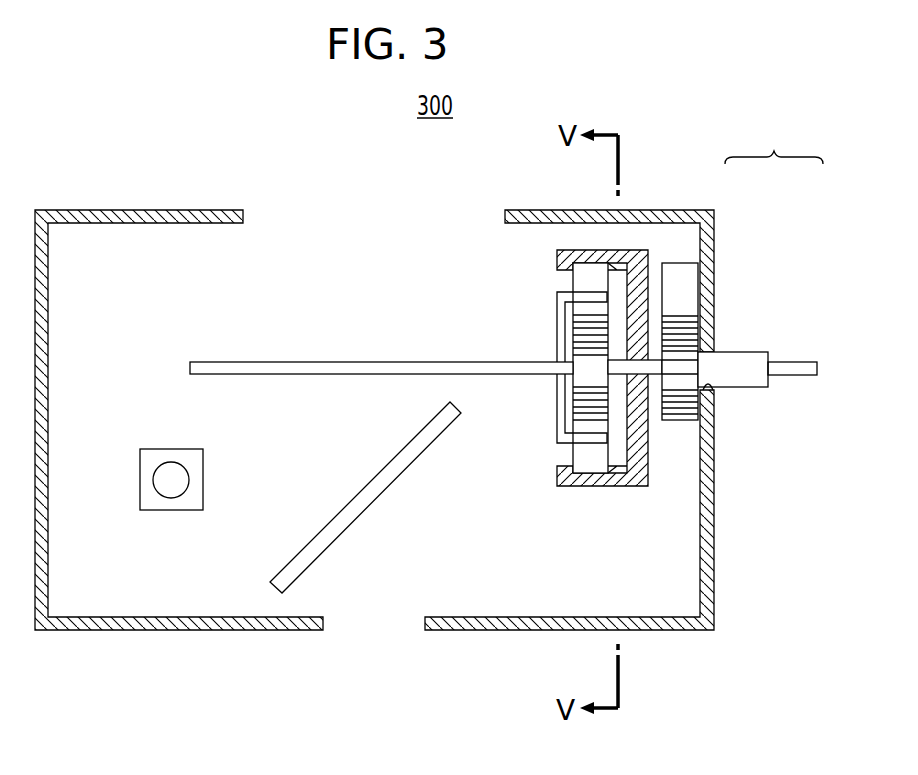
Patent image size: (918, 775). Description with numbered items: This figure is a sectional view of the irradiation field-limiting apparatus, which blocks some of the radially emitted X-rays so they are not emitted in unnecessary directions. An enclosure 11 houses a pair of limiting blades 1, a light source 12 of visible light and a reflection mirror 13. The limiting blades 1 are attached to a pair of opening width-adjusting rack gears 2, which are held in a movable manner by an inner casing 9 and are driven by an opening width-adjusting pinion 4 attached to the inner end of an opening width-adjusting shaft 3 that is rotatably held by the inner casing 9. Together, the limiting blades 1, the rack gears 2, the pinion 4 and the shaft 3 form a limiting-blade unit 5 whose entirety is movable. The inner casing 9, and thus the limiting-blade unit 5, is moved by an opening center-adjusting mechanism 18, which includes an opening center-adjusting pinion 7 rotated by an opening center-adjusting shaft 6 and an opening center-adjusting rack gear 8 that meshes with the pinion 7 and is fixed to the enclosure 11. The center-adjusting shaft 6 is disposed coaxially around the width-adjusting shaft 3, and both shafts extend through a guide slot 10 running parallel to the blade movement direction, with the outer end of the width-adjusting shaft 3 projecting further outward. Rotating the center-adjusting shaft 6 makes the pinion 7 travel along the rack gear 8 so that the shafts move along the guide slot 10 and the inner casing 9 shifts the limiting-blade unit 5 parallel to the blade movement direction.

The limiting blades 1 is at (294, 366).
The opening width-adjusting rack gears 2 is at (585, 282).
The opening width-adjusting shaft 3 is at (797, 365).
The opening width-adjusting pinion 4 is at (583, 393).
The limiting-blade unit 5 is at (547, 394).
The opening center-adjusting shaft 6 is at (753, 362).
The opening center-adjusting pinion 7 is at (690, 342).
The opening center-adjusting rack gear 8 is at (685, 283).
The inner casing 9 is at (615, 478).
The guide slot 10 is at (708, 388).
The enclosure 11 is at (647, 215).
The light source 12 is at (172, 449).
The reflection mirror 13 is at (366, 496).
The opening center-adjusting mechanism 18 is at (742, 272).